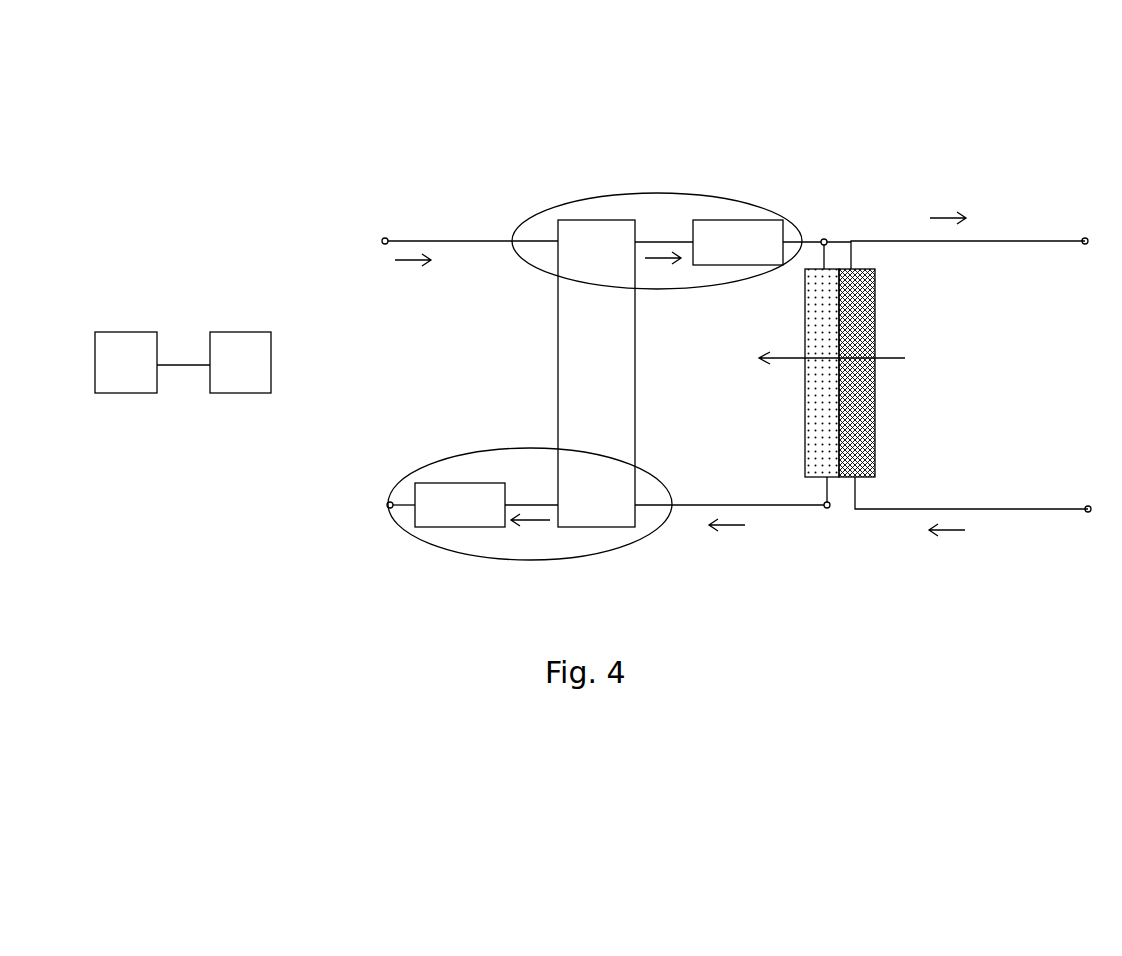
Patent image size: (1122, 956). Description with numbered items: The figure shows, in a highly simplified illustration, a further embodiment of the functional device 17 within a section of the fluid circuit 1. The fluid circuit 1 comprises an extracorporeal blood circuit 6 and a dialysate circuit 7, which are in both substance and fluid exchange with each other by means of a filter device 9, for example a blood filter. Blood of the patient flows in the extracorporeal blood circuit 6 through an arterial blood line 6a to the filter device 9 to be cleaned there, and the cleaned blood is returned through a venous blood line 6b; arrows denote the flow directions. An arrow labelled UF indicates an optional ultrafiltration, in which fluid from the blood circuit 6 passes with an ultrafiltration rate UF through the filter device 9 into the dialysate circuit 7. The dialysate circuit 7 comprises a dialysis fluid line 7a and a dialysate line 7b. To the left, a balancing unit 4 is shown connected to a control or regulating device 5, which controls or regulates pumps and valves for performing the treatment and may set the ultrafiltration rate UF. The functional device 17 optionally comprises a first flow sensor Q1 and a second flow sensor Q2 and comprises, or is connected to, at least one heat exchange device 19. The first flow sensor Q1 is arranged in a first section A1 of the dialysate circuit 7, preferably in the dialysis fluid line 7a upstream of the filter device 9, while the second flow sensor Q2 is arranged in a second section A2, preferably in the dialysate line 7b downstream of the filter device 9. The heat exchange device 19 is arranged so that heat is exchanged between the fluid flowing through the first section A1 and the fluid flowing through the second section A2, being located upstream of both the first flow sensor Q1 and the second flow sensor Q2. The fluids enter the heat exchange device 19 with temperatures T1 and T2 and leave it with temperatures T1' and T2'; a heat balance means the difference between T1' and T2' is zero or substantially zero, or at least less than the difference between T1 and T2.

The fluid circuit 1 is at (315, 128).
The balancing unit 4 is at (152, 362).
The control or regulating device 5 is at (240, 362).
The extracorporeal blood circuit 6 is at (923, 421).
The arterial blood line 6a is at (995, 510).
The venous blood line 6b is at (990, 241).
The dialysate circuit 7 is at (447, 373).
The dialysis fluid line 7a is at (824, 238).
The dialysate line 7b is at (775, 506).
The filter device 9 is at (840, 478).
The functional device 17 is at (792, 153).
The heat exchange device 19 is at (597, 527).
The first section A1 is at (770, 213).
The second section A2 is at (503, 562).
The temperature T1 is at (470, 238).
The temperature T1' is at (664, 237).
The temperature T2 is at (731, 502).
The temperature T2' is at (531, 500).
The first flow sensor Q1 is at (738, 242).
The second flow sensor Q2 is at (446, 505).
The ultrafiltration rate UF is at (850, 357).